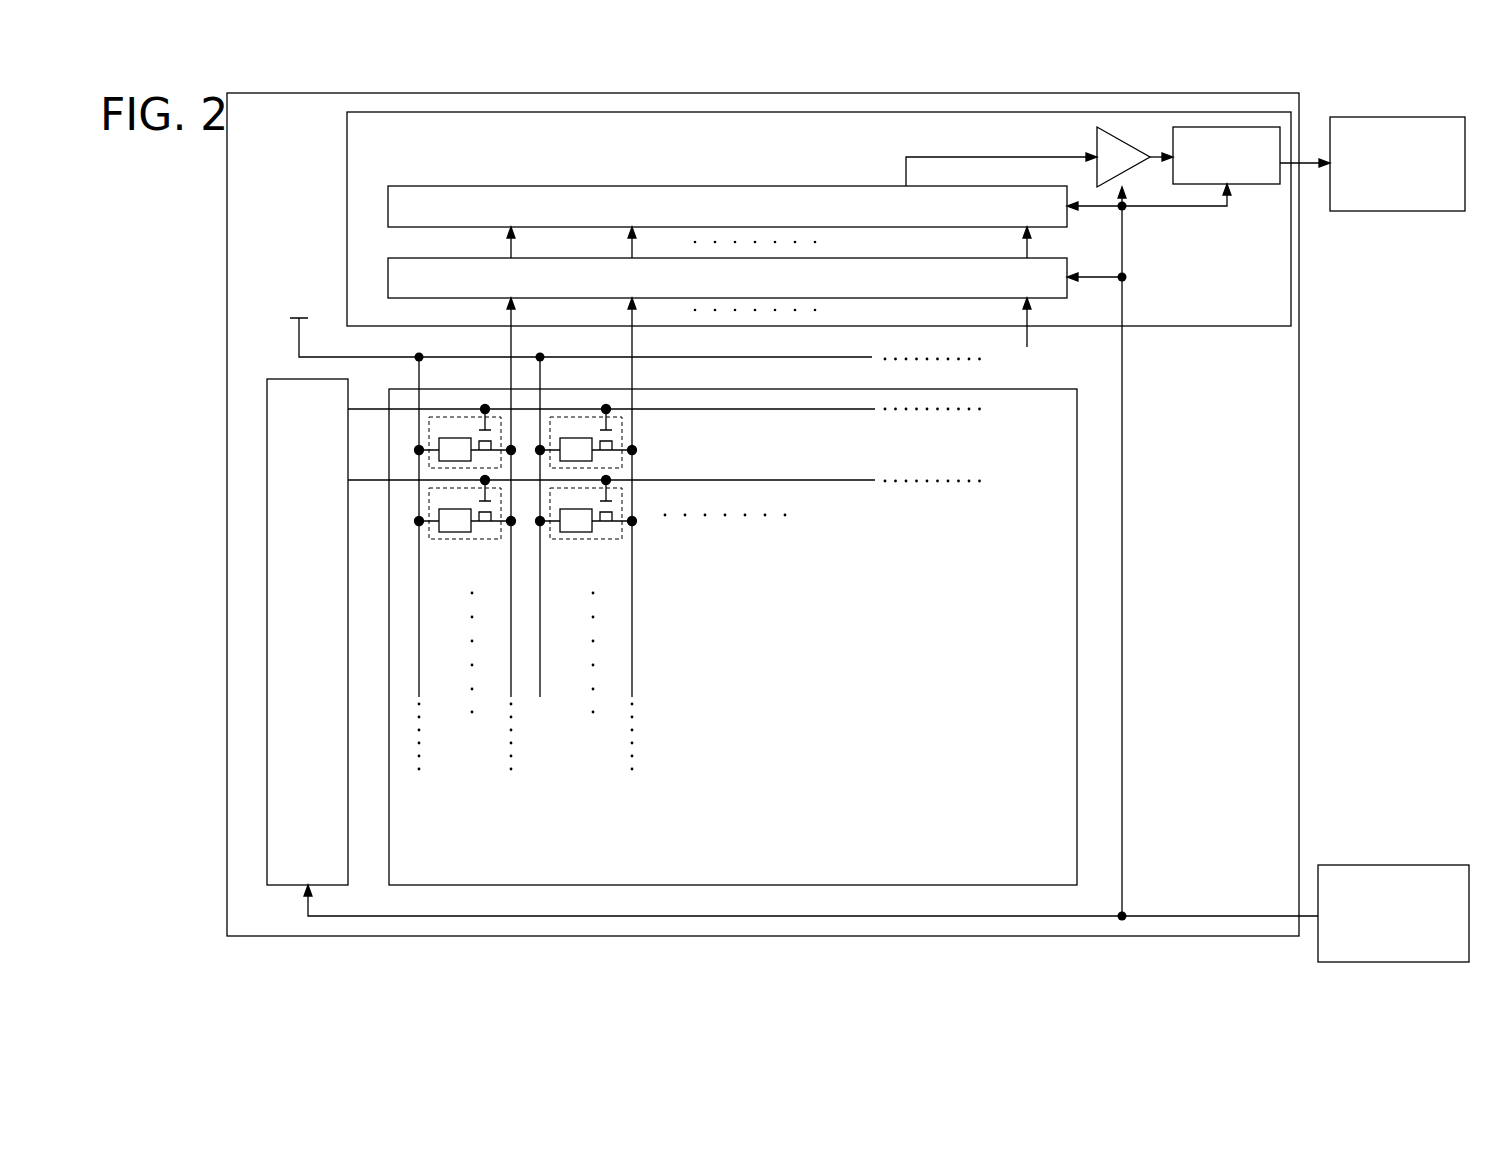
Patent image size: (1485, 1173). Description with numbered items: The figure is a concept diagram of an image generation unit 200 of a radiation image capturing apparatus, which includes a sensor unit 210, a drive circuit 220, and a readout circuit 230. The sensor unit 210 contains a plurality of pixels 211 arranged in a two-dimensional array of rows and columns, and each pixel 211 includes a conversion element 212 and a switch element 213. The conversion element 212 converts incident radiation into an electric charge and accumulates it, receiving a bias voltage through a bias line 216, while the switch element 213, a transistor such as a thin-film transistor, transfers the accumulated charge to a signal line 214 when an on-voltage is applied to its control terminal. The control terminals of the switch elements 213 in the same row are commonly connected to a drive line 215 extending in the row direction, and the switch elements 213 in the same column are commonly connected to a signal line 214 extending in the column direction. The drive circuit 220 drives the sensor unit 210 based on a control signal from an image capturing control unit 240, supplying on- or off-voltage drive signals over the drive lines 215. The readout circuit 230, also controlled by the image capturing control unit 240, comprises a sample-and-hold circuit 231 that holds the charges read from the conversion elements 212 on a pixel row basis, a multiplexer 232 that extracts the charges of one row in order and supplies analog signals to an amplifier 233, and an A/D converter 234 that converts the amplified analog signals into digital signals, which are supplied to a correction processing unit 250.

The image generation unit 200 is at (1299, 465).
The sensor unit 210 is at (1055, 388).
The pixel 211 is at (622, 430).
The conversion element 212 is at (575, 539).
The switch element 213 is at (612, 527).
The signal line 214 is at (632, 655).
The drive line 215 is at (840, 482).
The bias line 216 is at (541, 688).
The drive circuit 220 is at (276, 378).
The readout circuit 230 is at (347, 129).
The sample-and-hold circuit 231 is at (419, 258).
The multiplexer 232 is at (419, 186).
The amplifier 233 is at (1093, 140).
The A/D converter 234 is at (1268, 186).
The image capturing control unit 240 is at (1420, 864).
The correction processing unit 250 is at (1400, 212).